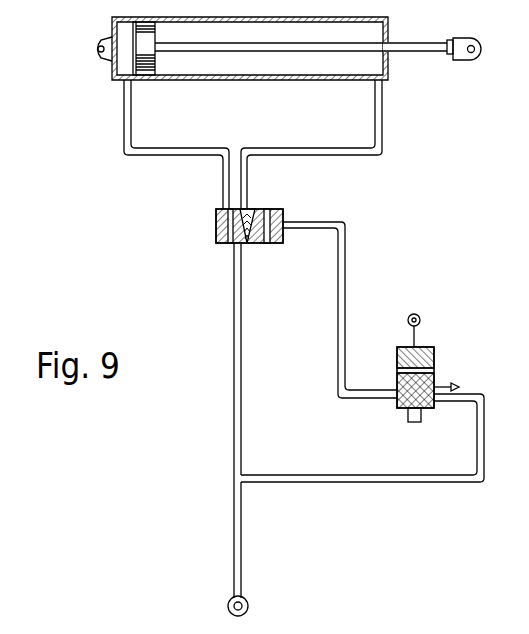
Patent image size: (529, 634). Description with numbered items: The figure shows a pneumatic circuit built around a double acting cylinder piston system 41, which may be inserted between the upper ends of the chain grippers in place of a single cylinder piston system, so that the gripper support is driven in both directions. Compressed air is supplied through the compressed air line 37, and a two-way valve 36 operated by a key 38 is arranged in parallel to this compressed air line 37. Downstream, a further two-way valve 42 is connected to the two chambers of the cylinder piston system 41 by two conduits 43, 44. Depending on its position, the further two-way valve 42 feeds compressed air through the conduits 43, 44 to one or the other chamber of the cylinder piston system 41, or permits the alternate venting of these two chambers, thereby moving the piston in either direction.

The two-way valve 36 is at (435, 360).
The compressed air line 37 is at (234, 353).
The key 38 is at (421, 317).
The double acting cylinder piston system 41 is at (227, 82).
The further two-way valve 42 is at (216, 221).
The conduit 43 is at (383, 95).
The conduit 44 is at (123, 86).